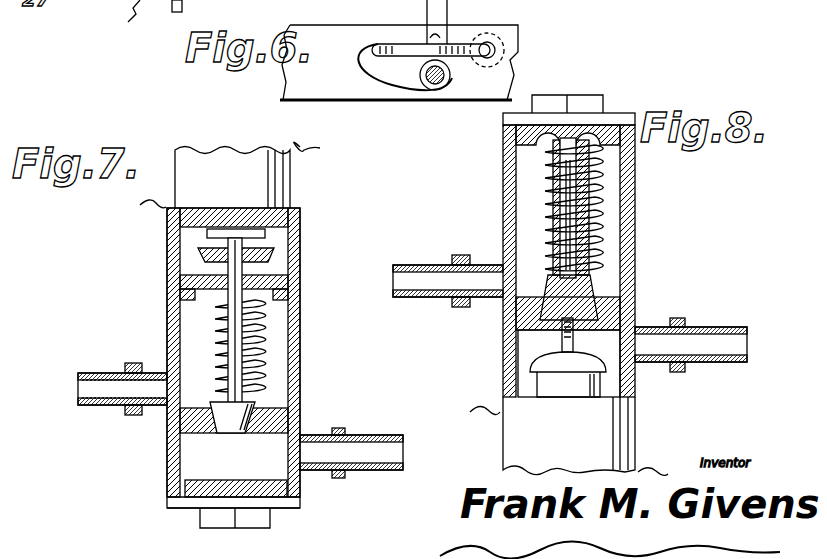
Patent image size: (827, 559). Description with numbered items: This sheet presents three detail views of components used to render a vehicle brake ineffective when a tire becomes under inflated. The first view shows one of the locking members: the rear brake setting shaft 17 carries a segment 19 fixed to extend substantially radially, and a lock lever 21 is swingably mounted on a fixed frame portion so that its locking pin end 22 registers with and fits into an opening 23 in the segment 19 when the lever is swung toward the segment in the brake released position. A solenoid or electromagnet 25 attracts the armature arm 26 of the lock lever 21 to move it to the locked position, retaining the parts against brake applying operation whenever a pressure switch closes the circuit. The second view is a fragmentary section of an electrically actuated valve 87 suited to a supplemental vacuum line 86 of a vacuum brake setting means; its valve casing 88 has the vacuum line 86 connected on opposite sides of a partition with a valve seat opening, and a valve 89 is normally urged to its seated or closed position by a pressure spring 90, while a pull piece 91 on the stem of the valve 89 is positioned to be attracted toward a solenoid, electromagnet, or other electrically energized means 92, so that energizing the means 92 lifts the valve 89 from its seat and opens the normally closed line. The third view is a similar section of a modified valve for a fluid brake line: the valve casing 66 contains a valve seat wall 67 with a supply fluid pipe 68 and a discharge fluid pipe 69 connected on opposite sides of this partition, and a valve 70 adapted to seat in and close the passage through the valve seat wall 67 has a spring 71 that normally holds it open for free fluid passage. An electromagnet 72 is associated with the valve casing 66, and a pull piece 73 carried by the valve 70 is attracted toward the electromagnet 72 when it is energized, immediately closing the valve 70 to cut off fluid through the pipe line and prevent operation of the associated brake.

In FIG. 6, the rear brake setting shaft 17 is at (446, 96).
In FIG. 6, the segment 19 is at (362, 96).
In FIG. 6, the lock lever 21 is at (448, 40).
In FIG. 6, the locking pin end 22 is at (374, 56).
In FIG. 6, the opening 23 is at (370, 46).
In FIG. 6, the electromagnet 25 is at (512, 72).
In FIG. 6, the armature arm 26 is at (496, 48).
In FIG. 8, the valve casing 66 is at (635, 218).
In FIG. 8, the valve seat wall 67 is at (598, 312).
In FIG. 8, the supply fluid pipe 68 is at (452, 300).
In FIG. 8, the discharge fluid pipe 69 is at (718, 356).
In FIG. 8, the valve 70 is at (598, 300).
In FIG. 8, the spring 71 is at (588, 190).
In FIG. 8, the electromagnet 72 is at (616, 426).
In FIG. 8, the pull piece 73 is at (545, 360).
In FIG. 7, the supplemental vacuum line 86 is at (370, 464).
In FIG. 7, the electrically actuated valve 87 is at (167, 465).
In FIG. 7, the valve casing 88 is at (167, 318).
In FIG. 7, the valve 89 is at (258, 404).
In FIG. 7, the pressure spring 90 is at (258, 338).
In FIG. 7, the pull piece 91 is at (268, 256).
In FIG. 7, the electrically energized means 92 is at (268, 186).